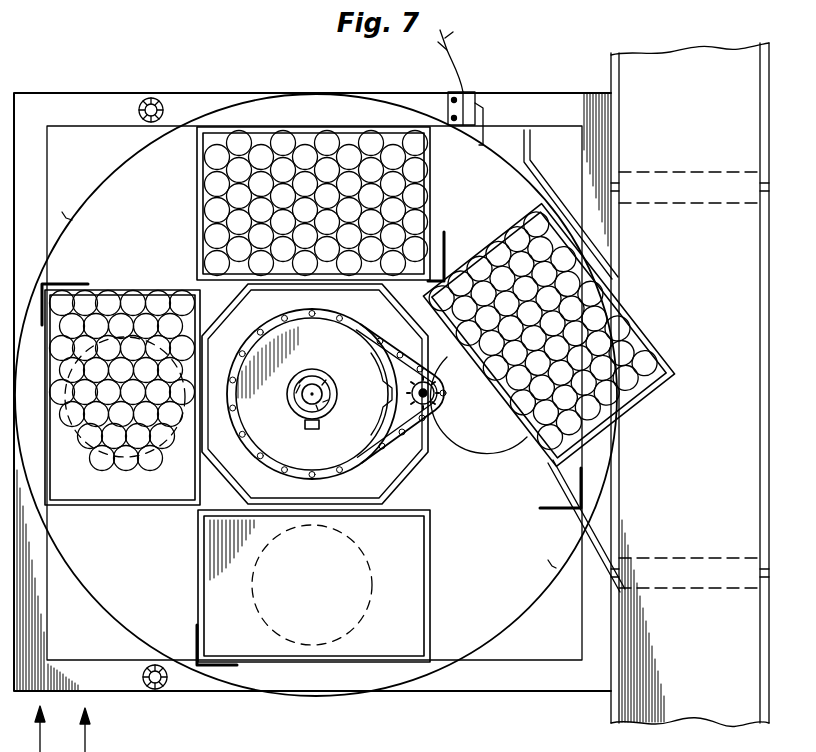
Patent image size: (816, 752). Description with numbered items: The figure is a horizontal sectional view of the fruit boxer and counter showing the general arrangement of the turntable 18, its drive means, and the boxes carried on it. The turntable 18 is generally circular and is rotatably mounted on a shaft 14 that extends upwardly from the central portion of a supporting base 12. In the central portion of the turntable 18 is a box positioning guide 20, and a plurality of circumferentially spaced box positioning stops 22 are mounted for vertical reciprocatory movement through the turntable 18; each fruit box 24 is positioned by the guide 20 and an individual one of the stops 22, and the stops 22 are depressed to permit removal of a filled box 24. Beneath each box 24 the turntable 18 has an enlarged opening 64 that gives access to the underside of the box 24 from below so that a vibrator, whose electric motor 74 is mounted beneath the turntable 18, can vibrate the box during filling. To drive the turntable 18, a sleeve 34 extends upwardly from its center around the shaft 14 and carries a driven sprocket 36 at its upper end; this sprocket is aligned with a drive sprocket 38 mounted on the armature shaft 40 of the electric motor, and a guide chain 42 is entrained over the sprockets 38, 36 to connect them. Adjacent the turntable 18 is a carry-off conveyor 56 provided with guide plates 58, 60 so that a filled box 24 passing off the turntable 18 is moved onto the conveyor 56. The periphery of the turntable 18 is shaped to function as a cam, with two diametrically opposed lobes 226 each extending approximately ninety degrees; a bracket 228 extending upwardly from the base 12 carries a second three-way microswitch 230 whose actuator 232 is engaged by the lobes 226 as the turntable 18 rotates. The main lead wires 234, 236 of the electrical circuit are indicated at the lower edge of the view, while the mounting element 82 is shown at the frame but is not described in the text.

The supporting base 12 is at (118, 680).
The shaft 14 is at (302, 383).
The turntable 18 is at (100, 588).
The box positioning guide 20 is at (418, 470).
The box positioning stops 22 is at (60, 284).
The fruit boxes 24 is at (144, 290).
The sleeve 34 is at (290, 396).
The driven sprocket 36 is at (272, 444).
The drive sprocket 38 is at (430, 396).
The armature shaft 40 is at (423, 380).
The guide chain 42 is at (388, 444).
The carry-off conveyor 56 is at (678, 710).
The guide plate 58 is at (552, 480).
The guide plate 60 is at (598, 251).
The enlarged opening 64 is at (160, 447).
The electric motor 74 is at (140, 458).
The bolt 82 is at (151, 97).
The lobes 226 is at (63, 212).
The bracket 228 is at (447, 96).
The second three-way microswitch 230 is at (468, 90).
The actuator 232 is at (486, 138).
The main lead wire 234 is at (55, 729).
The main lead wire 236 is at (107, 730).